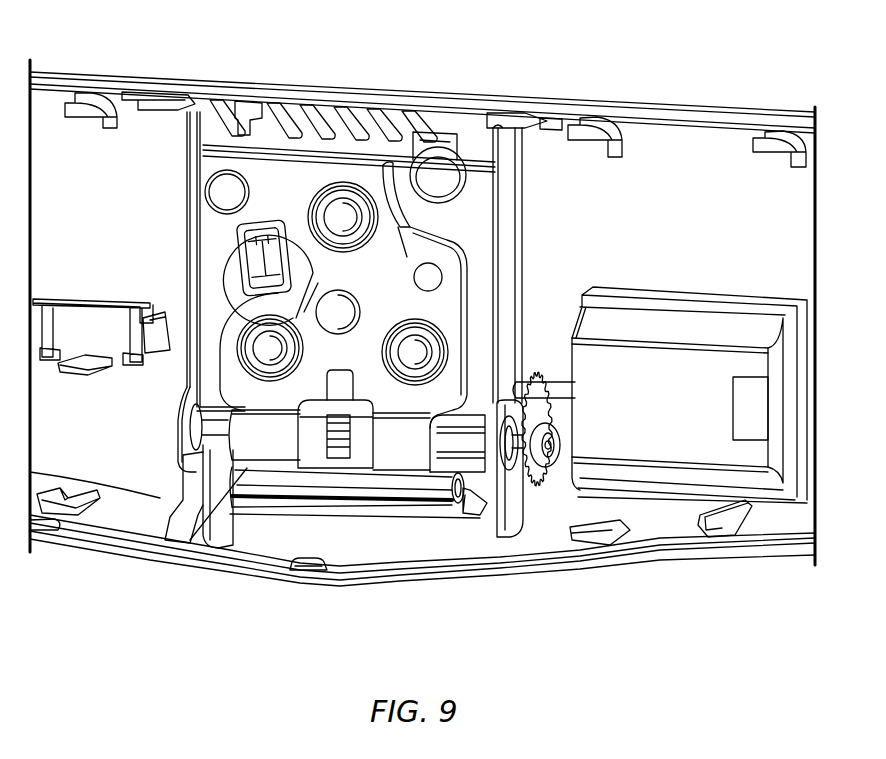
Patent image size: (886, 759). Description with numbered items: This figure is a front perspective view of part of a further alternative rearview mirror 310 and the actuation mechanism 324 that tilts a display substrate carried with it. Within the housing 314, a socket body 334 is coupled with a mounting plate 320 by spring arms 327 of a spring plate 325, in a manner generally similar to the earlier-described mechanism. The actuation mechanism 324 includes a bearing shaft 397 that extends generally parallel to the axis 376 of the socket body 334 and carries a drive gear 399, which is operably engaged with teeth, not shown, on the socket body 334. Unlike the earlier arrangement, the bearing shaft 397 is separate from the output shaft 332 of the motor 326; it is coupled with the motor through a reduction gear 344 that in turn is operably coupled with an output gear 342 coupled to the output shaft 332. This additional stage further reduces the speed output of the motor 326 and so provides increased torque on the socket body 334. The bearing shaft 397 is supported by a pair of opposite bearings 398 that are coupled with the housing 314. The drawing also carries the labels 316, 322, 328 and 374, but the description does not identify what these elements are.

The rearview mirror 310 is at (652, 67).
The housing 314 is at (108, 86).
The lower rail 316 is at (98, 510).
The mounting plate 320 is at (209, 119).
The support post 322 is at (490, 128).
The actuation mechanism 324 is at (559, 277).
The spring plate 325 is at (385, 182).
The motor 326 is at (698, 442).
The spring arms 327 is at (270, 440).
The roller bracket 328 is at (474, 482).
The output shaft 332 is at (563, 393).
The socket body 334 is at (417, 514).
The output gear 342 is at (541, 366).
The reduction gear 344 is at (557, 470).
The rod 374 is at (313, 499).
The axis 376 is at (240, 490).
The bearing shaft 397 is at (477, 481).
The bearings 398 is at (183, 452).
The drive gear 399 is at (333, 458).